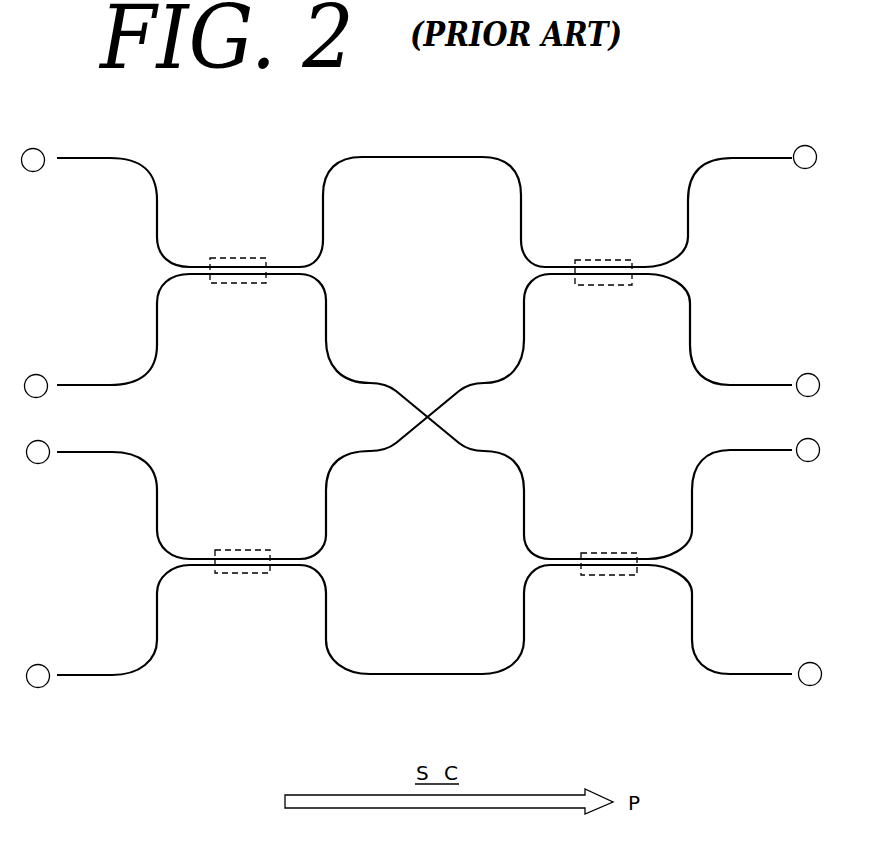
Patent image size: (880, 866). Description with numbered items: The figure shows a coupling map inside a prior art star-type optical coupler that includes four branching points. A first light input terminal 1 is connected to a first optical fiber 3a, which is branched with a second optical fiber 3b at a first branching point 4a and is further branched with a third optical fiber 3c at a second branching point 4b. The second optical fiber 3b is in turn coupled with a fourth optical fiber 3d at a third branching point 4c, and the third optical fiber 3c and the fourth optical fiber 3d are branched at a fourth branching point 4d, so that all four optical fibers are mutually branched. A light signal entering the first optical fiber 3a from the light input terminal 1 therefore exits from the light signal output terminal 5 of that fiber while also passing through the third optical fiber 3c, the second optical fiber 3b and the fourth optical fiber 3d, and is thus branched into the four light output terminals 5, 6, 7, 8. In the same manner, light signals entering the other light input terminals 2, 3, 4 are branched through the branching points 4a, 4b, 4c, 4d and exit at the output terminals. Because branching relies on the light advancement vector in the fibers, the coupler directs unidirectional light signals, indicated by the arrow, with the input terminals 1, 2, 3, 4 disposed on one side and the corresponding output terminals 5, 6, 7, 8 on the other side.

The first light input terminal 1 is at (33, 160).
The light input terminal 2 is at (36, 386).
The light input terminal 3 is at (38, 452).
The light input terminal 4 is at (38, 676).
The light signal output terminal 5 is at (805, 157).
The light output terminal 6 is at (808, 385).
The light output terminal 7 is at (808, 450).
The light output terminal 8 is at (810, 674).
The first optical fiber 3a is at (96, 157).
The second optical fiber 3b is at (77, 390).
The third optical fiber 3c is at (140, 457).
The fourth optical fiber 3d is at (97, 680).
The first branching point 4a is at (226, 258).
The second branching point 4b is at (588, 258).
The third branching point 4c is at (599, 578).
The fourth branching point 4d is at (227, 577).